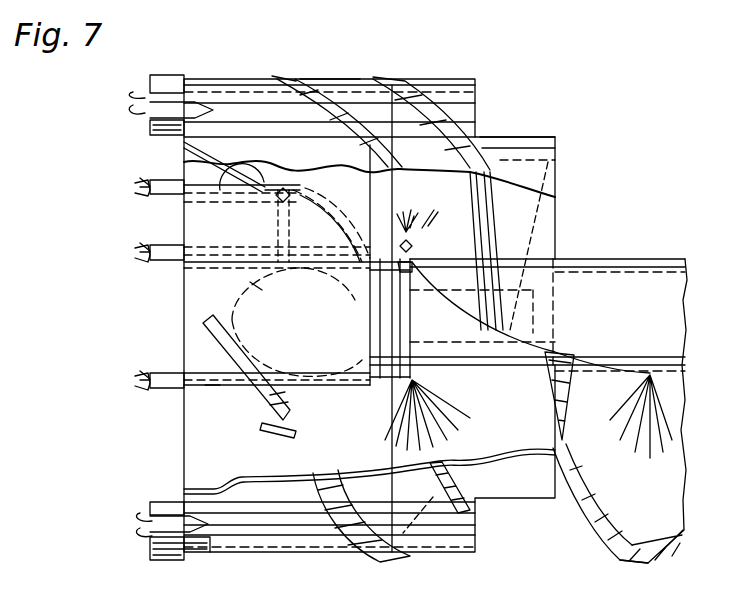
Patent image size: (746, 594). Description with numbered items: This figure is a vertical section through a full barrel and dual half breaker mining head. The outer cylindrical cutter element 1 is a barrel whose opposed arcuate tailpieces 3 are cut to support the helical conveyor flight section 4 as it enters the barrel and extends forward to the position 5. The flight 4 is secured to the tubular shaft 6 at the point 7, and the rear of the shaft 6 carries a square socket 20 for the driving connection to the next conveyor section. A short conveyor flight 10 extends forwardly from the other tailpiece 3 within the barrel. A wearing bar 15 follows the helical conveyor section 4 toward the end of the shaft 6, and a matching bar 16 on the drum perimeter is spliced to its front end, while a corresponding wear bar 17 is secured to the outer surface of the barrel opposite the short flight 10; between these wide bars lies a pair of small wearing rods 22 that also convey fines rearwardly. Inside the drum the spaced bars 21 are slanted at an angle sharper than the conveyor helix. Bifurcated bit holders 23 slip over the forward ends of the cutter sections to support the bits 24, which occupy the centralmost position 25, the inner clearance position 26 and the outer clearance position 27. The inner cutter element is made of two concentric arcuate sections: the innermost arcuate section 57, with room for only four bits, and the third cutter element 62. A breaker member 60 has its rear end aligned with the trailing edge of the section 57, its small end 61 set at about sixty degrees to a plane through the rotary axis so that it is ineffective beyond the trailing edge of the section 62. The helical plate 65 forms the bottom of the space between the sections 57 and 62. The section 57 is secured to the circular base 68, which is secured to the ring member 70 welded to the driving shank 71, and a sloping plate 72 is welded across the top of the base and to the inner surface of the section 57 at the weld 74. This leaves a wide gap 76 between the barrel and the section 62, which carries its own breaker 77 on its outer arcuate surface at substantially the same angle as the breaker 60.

The outer cylindrical cutter element 1 is at (322, 80).
The arcuate tailpiece 3 is at (508, 137).
The helical conveyor flight section 4 is at (645, 411).
The leading edge position of conveyor flight 5 is at (392, 188).
The tubular shaft 6 is at (547, 315).
The securement of flight to shaft 7 is at (545, 352).
The short conveyor flight 10 is at (540, 223).
The wearing bar 15 is at (612, 545).
The matching bar 16 is at (456, 151).
The wear bar 17 is at (300, 490).
The square socket 20 is at (518, 311).
The spaced bars 21 is at (266, 432).
The small wearing rods 22 is at (283, 79).
The bit holder 23 is at (165, 108).
The bit 24 is at (140, 101).
The centralmost bit position 25 is at (140, 189).
The inner clearance bit position 26 is at (135, 198).
The outer clearance bit position 27 is at (144, 180).
The innermost arcuate section 57 is at (212, 388).
The breaker member 60 is at (272, 403).
The small end of breaker 61 is at (205, 322).
The third cutter element 62 is at (244, 168).
The helical plate 65 is at (342, 224).
The circular base 68 is at (416, 228).
The ring member 70 is at (410, 260).
The driving shank 71 is at (509, 246).
The sloping plate 72 is at (266, 288).
The weld of sloping plate to arcuate section 74 is at (252, 288).
The wide gap 76 is at (310, 180).
The breaker 77 is at (286, 170).